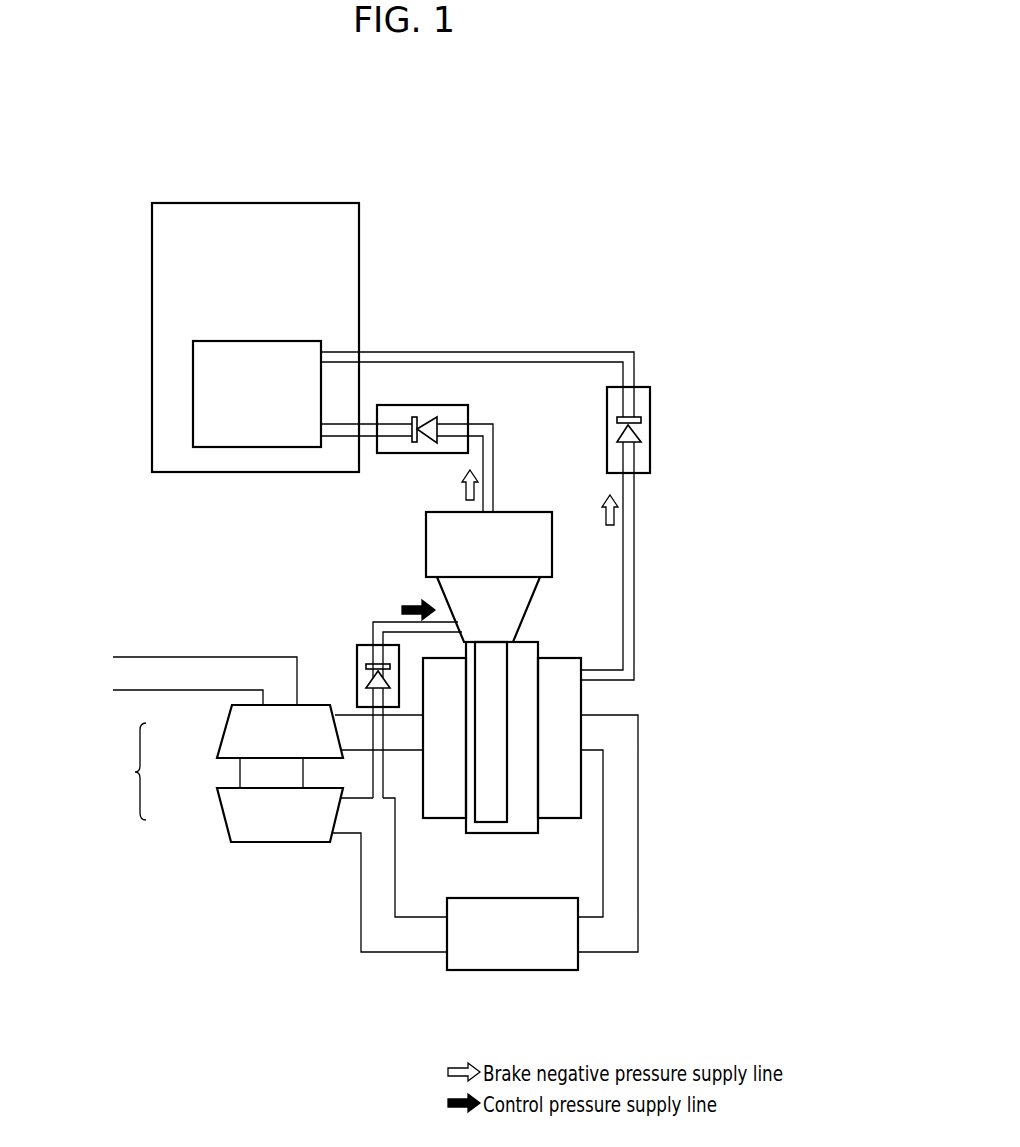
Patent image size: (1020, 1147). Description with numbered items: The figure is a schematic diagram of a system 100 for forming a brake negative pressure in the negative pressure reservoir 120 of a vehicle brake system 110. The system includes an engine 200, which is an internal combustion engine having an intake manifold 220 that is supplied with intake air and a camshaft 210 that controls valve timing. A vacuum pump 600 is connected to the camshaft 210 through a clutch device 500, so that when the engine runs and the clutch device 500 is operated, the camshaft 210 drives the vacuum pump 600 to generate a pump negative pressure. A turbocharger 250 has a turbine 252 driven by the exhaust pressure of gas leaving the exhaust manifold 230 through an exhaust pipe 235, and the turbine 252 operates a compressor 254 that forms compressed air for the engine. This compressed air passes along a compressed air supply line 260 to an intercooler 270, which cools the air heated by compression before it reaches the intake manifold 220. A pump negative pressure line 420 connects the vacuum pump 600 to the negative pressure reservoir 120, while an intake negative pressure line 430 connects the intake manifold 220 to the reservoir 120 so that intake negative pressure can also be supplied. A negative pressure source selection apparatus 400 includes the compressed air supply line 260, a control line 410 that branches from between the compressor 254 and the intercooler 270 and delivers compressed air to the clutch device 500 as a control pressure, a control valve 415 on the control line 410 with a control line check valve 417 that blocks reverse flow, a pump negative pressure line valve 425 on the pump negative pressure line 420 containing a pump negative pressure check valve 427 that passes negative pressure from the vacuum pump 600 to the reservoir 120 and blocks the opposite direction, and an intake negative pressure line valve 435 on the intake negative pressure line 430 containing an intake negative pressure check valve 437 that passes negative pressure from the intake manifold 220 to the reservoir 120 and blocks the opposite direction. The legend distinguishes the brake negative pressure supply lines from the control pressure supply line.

The system for forming a brake negative pressure 100 is at (121, 116).
The brake system 110 is at (359, 240).
The negative pressure reservoir 120 is at (250, 341).
The engine 200 is at (558, 756).
The camshaft 210 is at (491, 822).
The intake manifold 220 is at (563, 818).
The exhaust manifold 230 is at (441, 818).
The exhaust pipe 235 is at (187, 657).
The turbocharger 250 is at (263, 773).
The turbine 252 is at (222, 733).
The compressor 254 is at (222, 818).
The compressed air supply line 260 is at (398, 952).
The intercooler 270 is at (511, 970).
The negative pressure source selection apparatus 400 is at (663, 267).
The control line 410 is at (385, 622).
The control valve 415 is at (338, 645).
The control line check valve 417 is at (370, 645).
The pump negative pressure line 420 is at (493, 465).
The pump negative pressure line valve 425 is at (455, 409).
The pump negative pressure check valve 427 is at (425, 418).
The intake negative pressure line 430 is at (634, 530).
The intake negative pressure line valve 435 is at (661, 430).
The intake negative pressure check valve 437 is at (640, 433).
The clutch device 500 is at (527, 600).
The vacuum pump 600 is at (426, 523).